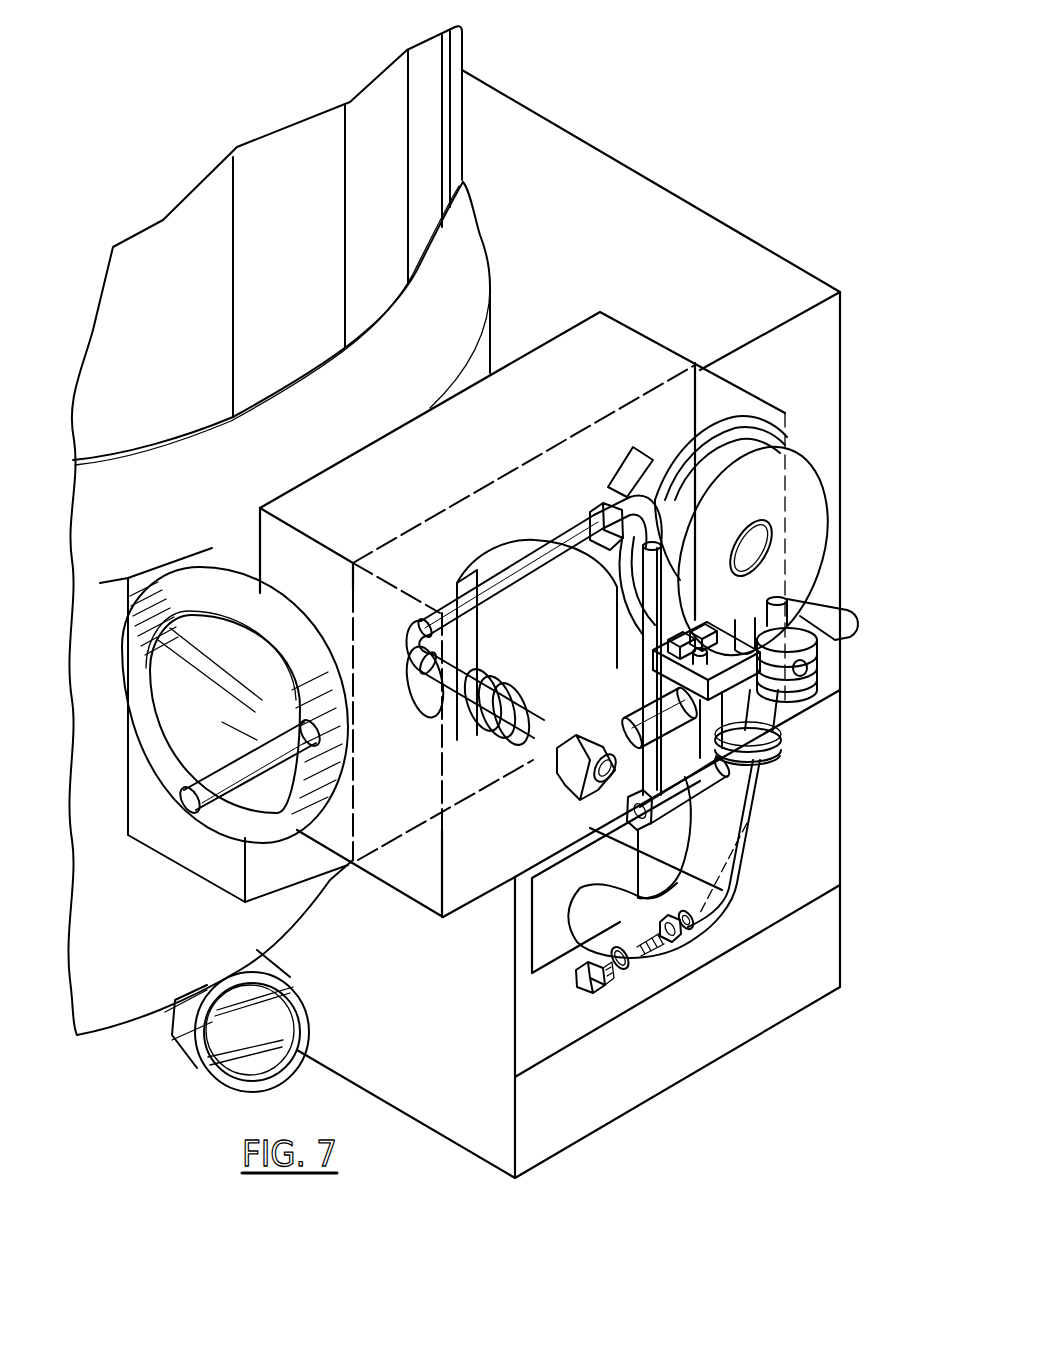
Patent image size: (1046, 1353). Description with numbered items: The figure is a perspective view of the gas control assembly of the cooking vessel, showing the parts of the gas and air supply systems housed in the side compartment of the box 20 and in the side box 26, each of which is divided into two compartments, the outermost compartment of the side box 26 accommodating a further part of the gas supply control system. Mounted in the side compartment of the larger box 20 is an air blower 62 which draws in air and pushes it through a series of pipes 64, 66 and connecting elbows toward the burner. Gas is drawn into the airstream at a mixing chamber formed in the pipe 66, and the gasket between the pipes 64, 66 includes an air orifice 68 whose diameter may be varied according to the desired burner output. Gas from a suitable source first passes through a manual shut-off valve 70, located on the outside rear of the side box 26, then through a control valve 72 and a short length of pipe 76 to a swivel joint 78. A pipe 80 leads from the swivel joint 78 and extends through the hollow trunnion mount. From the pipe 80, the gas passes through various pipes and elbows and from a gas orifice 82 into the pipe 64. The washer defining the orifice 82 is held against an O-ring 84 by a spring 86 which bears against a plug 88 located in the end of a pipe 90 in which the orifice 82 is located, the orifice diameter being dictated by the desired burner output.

The box 20 is at (707, 210).
The side box 26 is at (663, 347).
The air blower 62 is at (805, 473).
The pipe 64 is at (763, 736).
The pipe 66 is at (740, 820).
The air orifice 68 is at (770, 757).
The manual shut-off valve 70 is at (810, 668).
The control valve 72 is at (754, 711).
The pipe 76 is at (637, 720).
The swivel joint 78 is at (563, 767).
The pipe 80 is at (420, 672).
The gas orifice 82 is at (660, 921).
The O-ring 84 is at (693, 920).
The spring 86 is at (613, 952).
The plug 88 is at (580, 990).
The pipe 90 is at (626, 812).